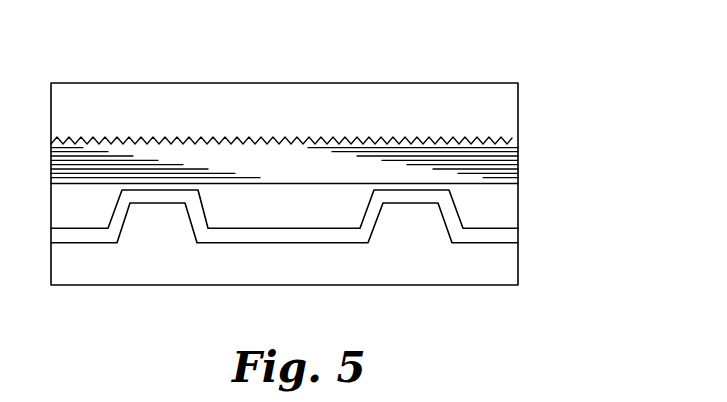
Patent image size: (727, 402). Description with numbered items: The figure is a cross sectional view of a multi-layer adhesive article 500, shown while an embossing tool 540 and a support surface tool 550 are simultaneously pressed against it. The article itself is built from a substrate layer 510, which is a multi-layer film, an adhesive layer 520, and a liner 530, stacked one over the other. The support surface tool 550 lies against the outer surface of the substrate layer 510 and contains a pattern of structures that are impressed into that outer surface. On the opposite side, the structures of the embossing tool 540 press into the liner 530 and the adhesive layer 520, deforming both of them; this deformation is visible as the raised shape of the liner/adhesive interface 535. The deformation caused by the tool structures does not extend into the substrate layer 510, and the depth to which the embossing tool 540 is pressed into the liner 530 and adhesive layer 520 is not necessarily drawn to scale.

The multi-layer article 500 is at (533, 58).
The support surface tool 550 is at (518, 110).
The substrate layer 510 is at (518, 162).
The adhesive layer 520 is at (518, 207).
The liner 530 is at (518, 235).
The embossing tool 540 is at (518, 268).
The liner/adhesive interface 535 is at (157, 190).